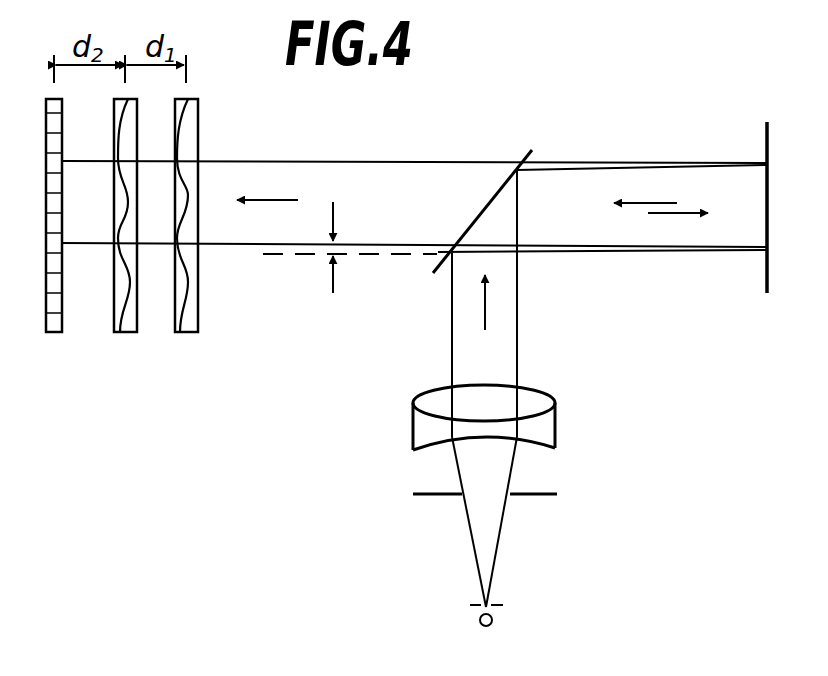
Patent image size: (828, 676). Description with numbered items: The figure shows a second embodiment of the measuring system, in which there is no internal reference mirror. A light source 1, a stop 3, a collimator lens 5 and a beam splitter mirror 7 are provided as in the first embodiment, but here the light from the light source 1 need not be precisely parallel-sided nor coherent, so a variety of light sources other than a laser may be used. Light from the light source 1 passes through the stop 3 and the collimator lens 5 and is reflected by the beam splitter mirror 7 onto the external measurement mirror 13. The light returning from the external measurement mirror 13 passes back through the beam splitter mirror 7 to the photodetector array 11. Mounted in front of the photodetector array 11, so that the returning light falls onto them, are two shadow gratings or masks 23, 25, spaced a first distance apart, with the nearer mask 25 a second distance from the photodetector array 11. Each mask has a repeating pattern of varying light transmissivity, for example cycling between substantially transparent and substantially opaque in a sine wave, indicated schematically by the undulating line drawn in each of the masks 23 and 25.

The light source 1 is at (493, 620).
The stop 3 is at (550, 494).
The collimator lens 5 is at (558, 425).
The beam splitter mirror 7 is at (530, 152).
The photodetector array 11 is at (50, 333).
The external measurement mirror 13 is at (767, 140).
The shadow grating or mask 23 is at (195, 334).
The shadow grating or mask 25 is at (130, 334).